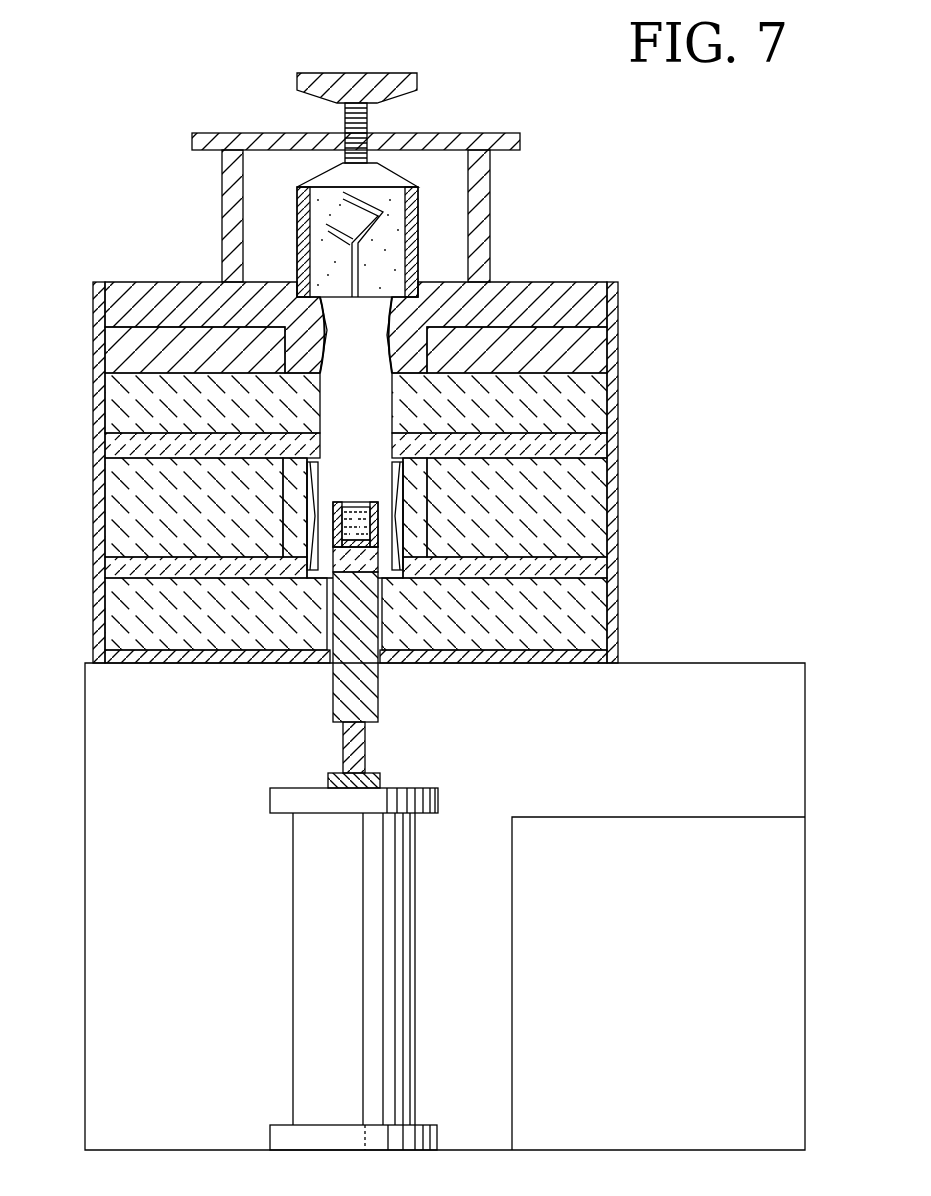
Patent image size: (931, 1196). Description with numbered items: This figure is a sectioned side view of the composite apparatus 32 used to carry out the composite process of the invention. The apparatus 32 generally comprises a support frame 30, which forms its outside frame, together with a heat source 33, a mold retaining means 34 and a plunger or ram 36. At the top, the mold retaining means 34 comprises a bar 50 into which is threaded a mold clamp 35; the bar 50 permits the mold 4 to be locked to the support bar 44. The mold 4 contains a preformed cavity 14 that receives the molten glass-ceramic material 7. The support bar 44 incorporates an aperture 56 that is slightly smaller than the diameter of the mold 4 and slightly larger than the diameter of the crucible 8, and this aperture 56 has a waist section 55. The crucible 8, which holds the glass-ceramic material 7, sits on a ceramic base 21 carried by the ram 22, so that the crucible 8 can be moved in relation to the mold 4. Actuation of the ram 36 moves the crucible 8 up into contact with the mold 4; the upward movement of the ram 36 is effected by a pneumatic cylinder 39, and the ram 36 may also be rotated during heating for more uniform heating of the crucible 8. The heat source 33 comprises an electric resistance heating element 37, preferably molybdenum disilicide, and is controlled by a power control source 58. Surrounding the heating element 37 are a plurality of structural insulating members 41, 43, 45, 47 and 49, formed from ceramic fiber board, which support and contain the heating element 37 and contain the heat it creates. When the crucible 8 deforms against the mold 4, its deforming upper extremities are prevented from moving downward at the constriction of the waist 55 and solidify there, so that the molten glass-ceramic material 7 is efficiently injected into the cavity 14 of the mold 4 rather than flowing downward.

The mold 4 is at (373, 230).
The glass-ceramic material 7 is at (357, 502).
The crucible 8 is at (358, 505).
The cavity 14 is at (350, 253).
The ceramic base 21 is at (352, 560).
The ram 22 is at (363, 695).
The support frame 30 is at (619, 647).
The apparatus 32 is at (355, 451).
The heat source 33 is at (310, 480).
The mold retaining means 34 is at (418, 133).
The mold clamp 35 is at (388, 73).
The ram 36 is at (367, 755).
The electric resistance heating element 37 is at (400, 507).
The pneumatic cylinder 39 is at (310, 985).
The structural insulating member 41 is at (592, 620).
The structural insulating member 43 is at (592, 572).
The support bar 44 is at (490, 203).
The structural insulating member 45 is at (592, 512).
The structural insulating member 47 is at (592, 450).
The structural insulating member 49 is at (592, 407).
The bar 50 is at (369, 188).
The waist section 55 is at (324, 316).
The aperture 56 is at (388, 353).
The power control source 58 is at (537, 830).